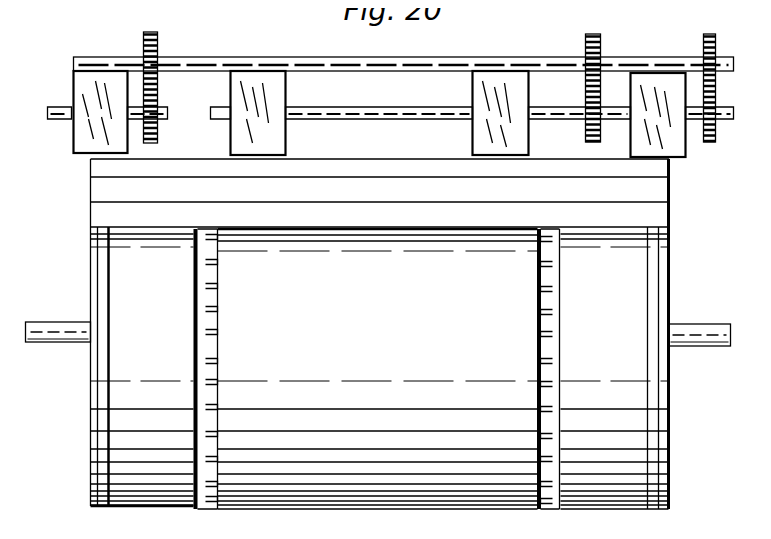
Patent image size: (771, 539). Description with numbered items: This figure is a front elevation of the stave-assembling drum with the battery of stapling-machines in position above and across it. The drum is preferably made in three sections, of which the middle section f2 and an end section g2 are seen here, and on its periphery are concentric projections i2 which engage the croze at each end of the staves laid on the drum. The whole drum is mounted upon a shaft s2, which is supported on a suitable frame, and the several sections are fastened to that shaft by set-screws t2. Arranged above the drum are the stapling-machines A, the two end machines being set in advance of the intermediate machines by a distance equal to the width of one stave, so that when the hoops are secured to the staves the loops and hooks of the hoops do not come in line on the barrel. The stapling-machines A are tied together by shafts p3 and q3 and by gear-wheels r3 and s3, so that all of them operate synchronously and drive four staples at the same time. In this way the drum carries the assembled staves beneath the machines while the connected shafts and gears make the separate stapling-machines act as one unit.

The stapling-machine A is at (238, 137).
The shaft p3 is at (47, 130).
The shaft q3 is at (738, 74).
The gear-wheel r3 is at (143, 42).
The gear-wheel s3 is at (645, 246).
The shaft s2 is at (58, 345).
The set-screw t2 is at (217, 335).
The drum section f2 is at (378, 369).
The drum section g2 is at (615, 368).
The concentric projection i2 is at (90, 502).